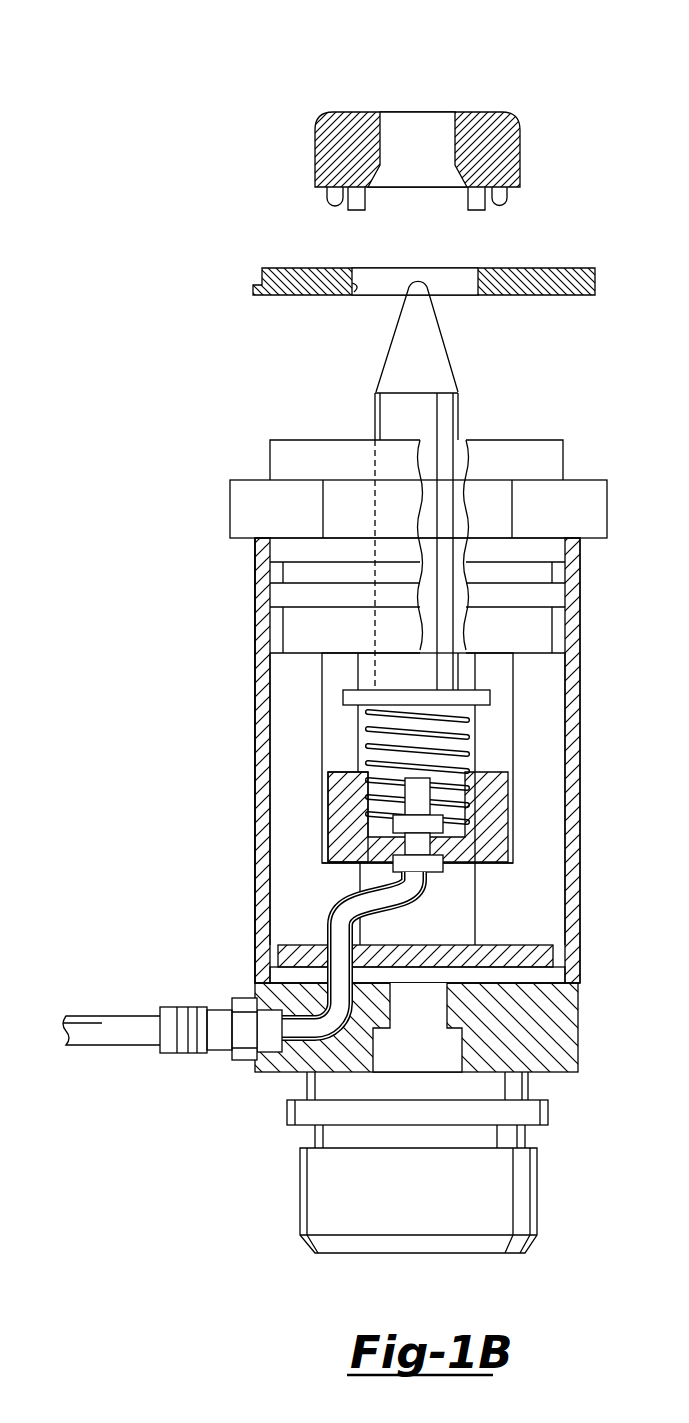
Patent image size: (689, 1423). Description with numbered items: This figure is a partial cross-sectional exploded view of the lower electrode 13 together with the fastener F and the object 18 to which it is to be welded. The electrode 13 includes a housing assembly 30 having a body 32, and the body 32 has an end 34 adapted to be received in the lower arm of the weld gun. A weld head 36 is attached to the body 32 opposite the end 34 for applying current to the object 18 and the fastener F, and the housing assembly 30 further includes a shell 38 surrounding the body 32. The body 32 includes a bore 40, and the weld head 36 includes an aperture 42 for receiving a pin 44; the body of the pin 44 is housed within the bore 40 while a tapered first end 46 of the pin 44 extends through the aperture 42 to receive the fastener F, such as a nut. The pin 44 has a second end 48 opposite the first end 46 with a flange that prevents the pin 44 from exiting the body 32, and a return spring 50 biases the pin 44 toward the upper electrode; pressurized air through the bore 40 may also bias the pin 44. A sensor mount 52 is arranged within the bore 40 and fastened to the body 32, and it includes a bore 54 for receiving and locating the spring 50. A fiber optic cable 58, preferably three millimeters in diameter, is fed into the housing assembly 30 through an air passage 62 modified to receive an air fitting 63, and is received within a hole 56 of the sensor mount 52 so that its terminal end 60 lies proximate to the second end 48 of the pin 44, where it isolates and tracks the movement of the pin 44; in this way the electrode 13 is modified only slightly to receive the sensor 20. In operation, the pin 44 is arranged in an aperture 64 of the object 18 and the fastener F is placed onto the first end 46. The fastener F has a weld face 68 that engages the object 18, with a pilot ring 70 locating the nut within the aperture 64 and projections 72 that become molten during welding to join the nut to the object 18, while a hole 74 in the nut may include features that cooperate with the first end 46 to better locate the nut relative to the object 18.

The fastener F is at (296, 97).
The hole 74 is at (383, 133).
The projections 72 is at (320, 192).
The pilot ring 70 is at (357, 210).
The weld face 68 is at (442, 190).
The object 18 is at (260, 282).
The aperture 64 is at (357, 296).
The first end 46 is at (432, 330).
The pin 44 is at (375, 413).
The aperture 42 is at (455, 442).
The weld head 36 is at (288, 455).
The shell 38 is at (262, 562).
The housing assembly 30 is at (252, 625).
The bore 40 is at (328, 680).
The body 32 is at (288, 722).
The second end 48 is at (485, 712).
The terminal end 60 is at (370, 765).
The return spring 50 is at (465, 756).
The sensor mount 52 is at (333, 818).
The bore 54 is at (485, 790).
The lower electrode 13 is at (256, 862).
The sensor 20 is at (330, 864).
The hole 56 is at (434, 848).
The fiber optic cable 58 is at (337, 930).
The air fitting 63 is at (172, 1052).
The air passage 62 is at (300, 1035).
The end 34 is at (537, 1198).